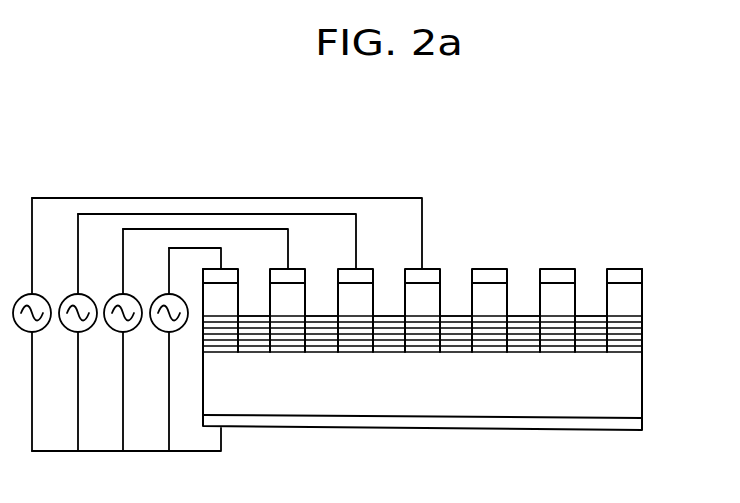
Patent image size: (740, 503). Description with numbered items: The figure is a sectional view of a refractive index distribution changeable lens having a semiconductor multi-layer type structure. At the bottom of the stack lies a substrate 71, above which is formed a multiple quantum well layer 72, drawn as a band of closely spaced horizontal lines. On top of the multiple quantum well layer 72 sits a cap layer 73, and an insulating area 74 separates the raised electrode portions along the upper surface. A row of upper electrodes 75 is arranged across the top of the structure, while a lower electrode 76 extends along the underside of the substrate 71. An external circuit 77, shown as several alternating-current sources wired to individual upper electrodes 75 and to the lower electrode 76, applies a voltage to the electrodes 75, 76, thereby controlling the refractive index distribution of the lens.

The substrate 71 is at (625, 392).
The multiple quantum well layer 72 is at (657, 317).
The cap layer 73 is at (630, 306).
The insulating area 74 is at (590, 318).
The upper electrodes 75 is at (628, 280).
The lower electrode 76 is at (615, 430).
The external circuit 77 is at (117, 213).